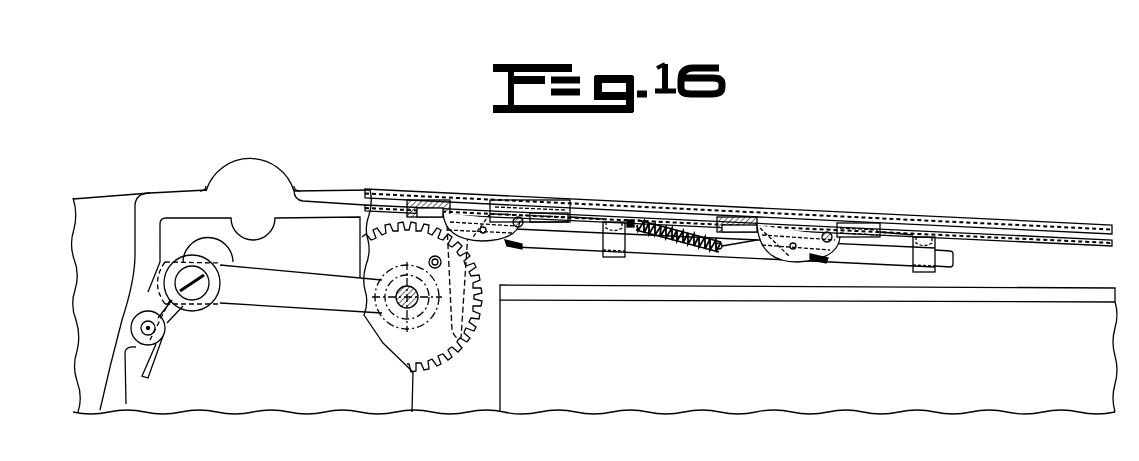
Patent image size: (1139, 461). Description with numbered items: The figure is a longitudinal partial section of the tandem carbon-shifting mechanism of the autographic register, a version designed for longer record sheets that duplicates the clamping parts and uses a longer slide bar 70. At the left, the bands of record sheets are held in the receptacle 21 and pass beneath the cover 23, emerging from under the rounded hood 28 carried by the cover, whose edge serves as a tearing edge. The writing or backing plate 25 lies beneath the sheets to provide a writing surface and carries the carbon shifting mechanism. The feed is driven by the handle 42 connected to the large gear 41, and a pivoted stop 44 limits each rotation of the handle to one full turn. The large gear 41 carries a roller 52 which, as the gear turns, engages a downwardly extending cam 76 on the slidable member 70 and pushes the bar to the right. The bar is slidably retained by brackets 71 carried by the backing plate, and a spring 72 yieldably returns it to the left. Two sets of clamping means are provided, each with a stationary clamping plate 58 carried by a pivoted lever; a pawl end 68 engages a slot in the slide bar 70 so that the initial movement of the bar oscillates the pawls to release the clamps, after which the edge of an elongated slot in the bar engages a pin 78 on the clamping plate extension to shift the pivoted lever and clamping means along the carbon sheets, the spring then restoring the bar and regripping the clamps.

The receptacle 21 is at (498, 408).
The cover 23 is at (968, 219).
The writing or backing plate 25 is at (667, 216).
The rounded hood 28 is at (264, 138).
The large gear 41 is at (450, 366).
The handle 42 is at (292, 312).
The pivoted stop 44 is at (157, 366).
The roller 52 is at (430, 260).
The stationary clamping plate 58 is at (462, 212).
The pawl end 68 is at (514, 247).
The slidable member or slide bar 70 is at (569, 245).
The brackets 71 is at (613, 258).
The spring 72 is at (700, 250).
The cam 76 is at (447, 325).
The pin 78 is at (484, 234).